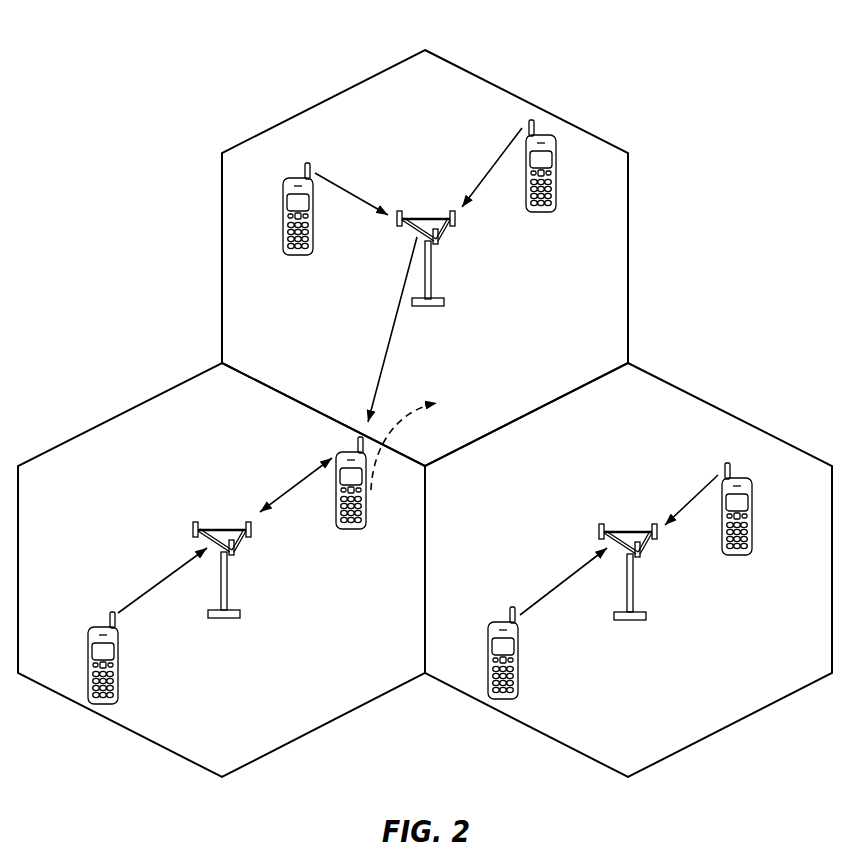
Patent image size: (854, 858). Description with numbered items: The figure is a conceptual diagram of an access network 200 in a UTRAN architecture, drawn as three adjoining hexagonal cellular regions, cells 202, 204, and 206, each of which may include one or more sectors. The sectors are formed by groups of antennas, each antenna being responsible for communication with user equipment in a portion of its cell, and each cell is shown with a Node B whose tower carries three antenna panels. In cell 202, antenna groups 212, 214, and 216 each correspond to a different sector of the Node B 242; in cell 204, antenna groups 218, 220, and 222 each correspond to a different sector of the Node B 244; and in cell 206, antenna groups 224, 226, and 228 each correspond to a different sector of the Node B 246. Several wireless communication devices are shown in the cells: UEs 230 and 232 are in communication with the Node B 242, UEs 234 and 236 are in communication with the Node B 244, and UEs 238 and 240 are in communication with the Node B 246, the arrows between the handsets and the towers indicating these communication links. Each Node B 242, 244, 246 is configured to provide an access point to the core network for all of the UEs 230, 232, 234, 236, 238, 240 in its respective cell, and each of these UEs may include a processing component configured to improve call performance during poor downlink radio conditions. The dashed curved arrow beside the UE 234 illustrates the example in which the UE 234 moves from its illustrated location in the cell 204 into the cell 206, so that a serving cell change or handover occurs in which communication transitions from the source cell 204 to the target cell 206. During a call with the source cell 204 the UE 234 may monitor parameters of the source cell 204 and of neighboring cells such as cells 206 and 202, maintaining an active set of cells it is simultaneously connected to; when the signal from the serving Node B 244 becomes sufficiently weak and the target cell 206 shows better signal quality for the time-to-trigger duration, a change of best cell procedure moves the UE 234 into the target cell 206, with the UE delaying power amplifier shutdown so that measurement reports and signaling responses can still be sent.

The access network 200 is at (745, 78).
The cell 202 is at (730, 413).
The cell 204 is at (97, 422).
The cell 206 is at (511, 90).
The antenna group 212 is at (598, 527).
The antenna group 214 is at (641, 558).
The antenna group 216 is at (659, 536).
The antenna group 218 is at (236, 557).
The antenna group 220 is at (253, 537).
The antenna group 222 is at (193, 525).
The antenna group 224 is at (397, 228).
The antenna group 226 is at (438, 244).
The antenna group 228 is at (456, 222).
The UE 230 is at (752, 505).
The UE 232 is at (488, 646).
The UE 234 is at (350, 529).
The UE 236 is at (89, 648).
The UE 238 is at (297, 258).
The UE 240 is at (545, 213).
The Node B 242 is at (626, 551).
The Node B 244 is at (221, 549).
The Node B 246 is at (424, 238).